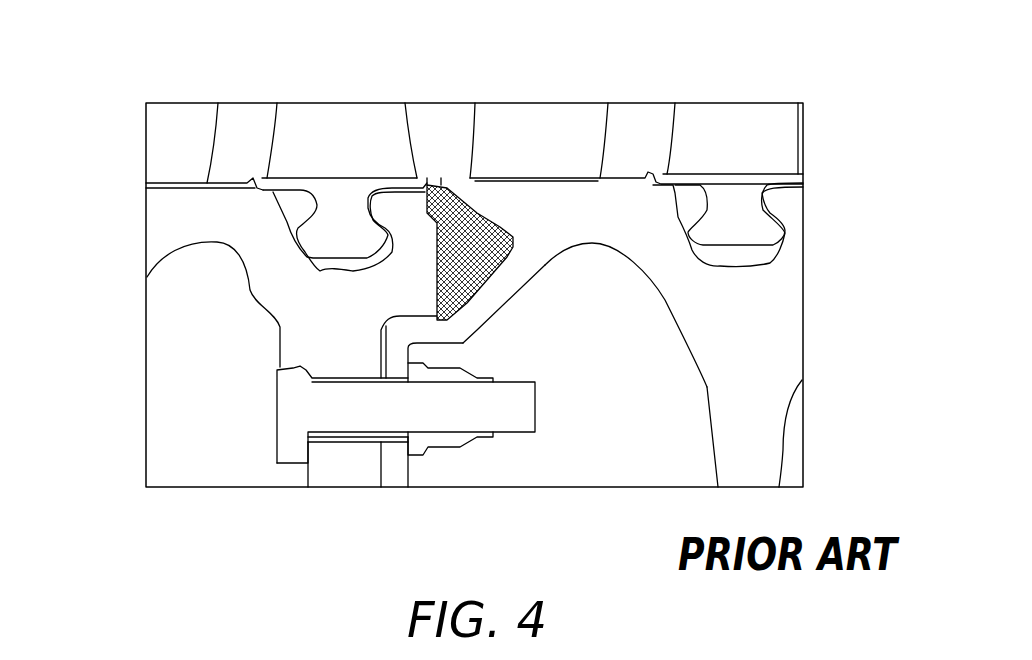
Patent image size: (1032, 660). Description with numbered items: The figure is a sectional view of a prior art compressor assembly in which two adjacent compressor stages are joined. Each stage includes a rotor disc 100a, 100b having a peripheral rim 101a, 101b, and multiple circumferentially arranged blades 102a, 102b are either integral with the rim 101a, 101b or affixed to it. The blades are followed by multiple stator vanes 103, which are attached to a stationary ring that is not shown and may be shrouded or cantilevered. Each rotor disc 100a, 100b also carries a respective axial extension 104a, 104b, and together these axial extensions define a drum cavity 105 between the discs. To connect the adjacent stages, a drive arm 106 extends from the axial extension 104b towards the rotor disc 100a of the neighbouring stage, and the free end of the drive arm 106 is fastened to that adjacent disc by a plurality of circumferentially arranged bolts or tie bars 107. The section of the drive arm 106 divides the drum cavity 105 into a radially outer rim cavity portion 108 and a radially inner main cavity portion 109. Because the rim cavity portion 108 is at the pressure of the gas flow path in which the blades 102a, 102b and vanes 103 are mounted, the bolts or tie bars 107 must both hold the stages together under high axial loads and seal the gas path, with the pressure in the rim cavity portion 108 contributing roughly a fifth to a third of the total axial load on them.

The rotor disc 100a is at (337, 468).
The rotor disc 100b is at (750, 430).
The peripheral rim 101a is at (267, 263).
The peripheral rim 101b is at (793, 218).
The blades 102a is at (348, 149).
The blades 102b is at (760, 156).
The stator vanes 103 is at (552, 151).
The axial extension 104a is at (175, 223).
The axial extension 104b is at (582, 207).
The drum cavity 105 is at (558, 460).
The drive arm 106 is at (480, 305).
The bolts or tie bars 107 is at (347, 408).
The rim cavity portion 108 is at (446, 212).
The main cavity portion 109 is at (655, 422).